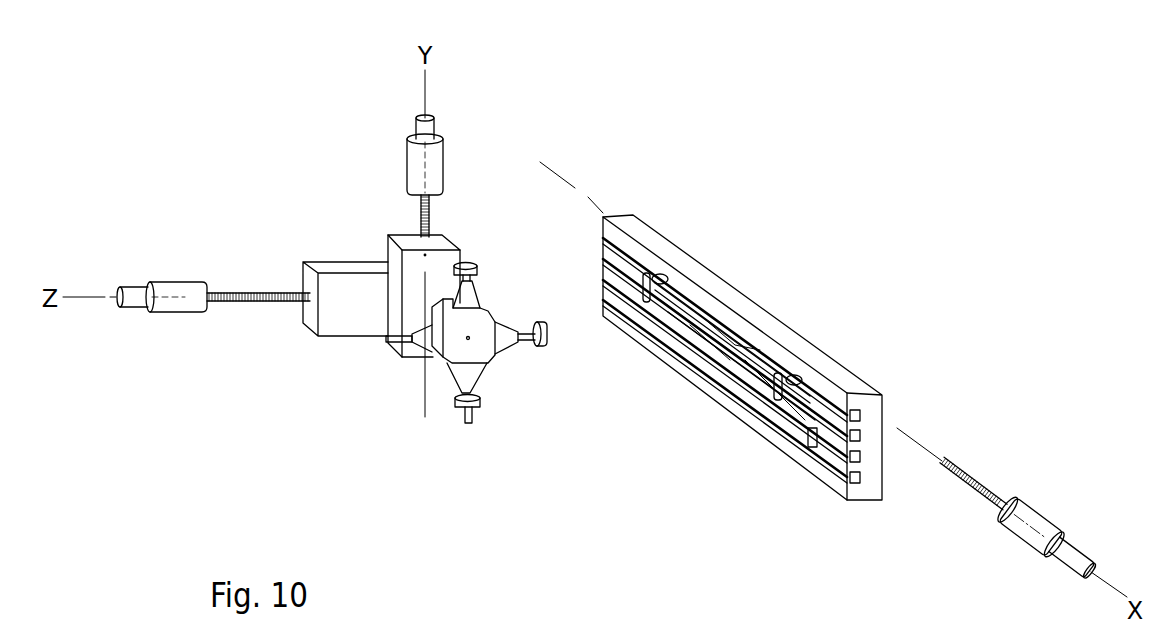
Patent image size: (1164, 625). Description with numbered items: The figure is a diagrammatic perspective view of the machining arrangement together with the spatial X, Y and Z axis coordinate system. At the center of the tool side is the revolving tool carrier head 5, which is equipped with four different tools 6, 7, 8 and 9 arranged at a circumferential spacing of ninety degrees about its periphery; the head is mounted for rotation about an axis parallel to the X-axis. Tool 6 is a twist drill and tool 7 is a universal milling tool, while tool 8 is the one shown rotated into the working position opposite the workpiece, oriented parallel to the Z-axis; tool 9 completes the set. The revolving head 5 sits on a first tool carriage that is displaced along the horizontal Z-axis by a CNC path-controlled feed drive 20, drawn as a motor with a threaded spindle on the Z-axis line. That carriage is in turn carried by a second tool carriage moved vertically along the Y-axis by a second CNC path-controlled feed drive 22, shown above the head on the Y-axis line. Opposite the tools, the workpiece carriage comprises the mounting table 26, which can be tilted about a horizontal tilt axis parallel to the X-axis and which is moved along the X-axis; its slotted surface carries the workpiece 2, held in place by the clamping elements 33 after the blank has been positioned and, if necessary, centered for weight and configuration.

The workpiece 2 is at (750, 370).
The revolving tool carrier head 5 is at (463, 345).
The tool (twist drill) 6 is at (390, 347).
The tool (universal milling tool) 7 is at (480, 415).
The tool 8 is at (535, 322).
The tool 9 is at (473, 268).
The CNC path-controlled feed drive 20 is at (185, 307).
The CNC path-controlled feed drive 22 is at (437, 163).
The mounting table 26 is at (870, 487).
The clamping elements 33 is at (777, 375).